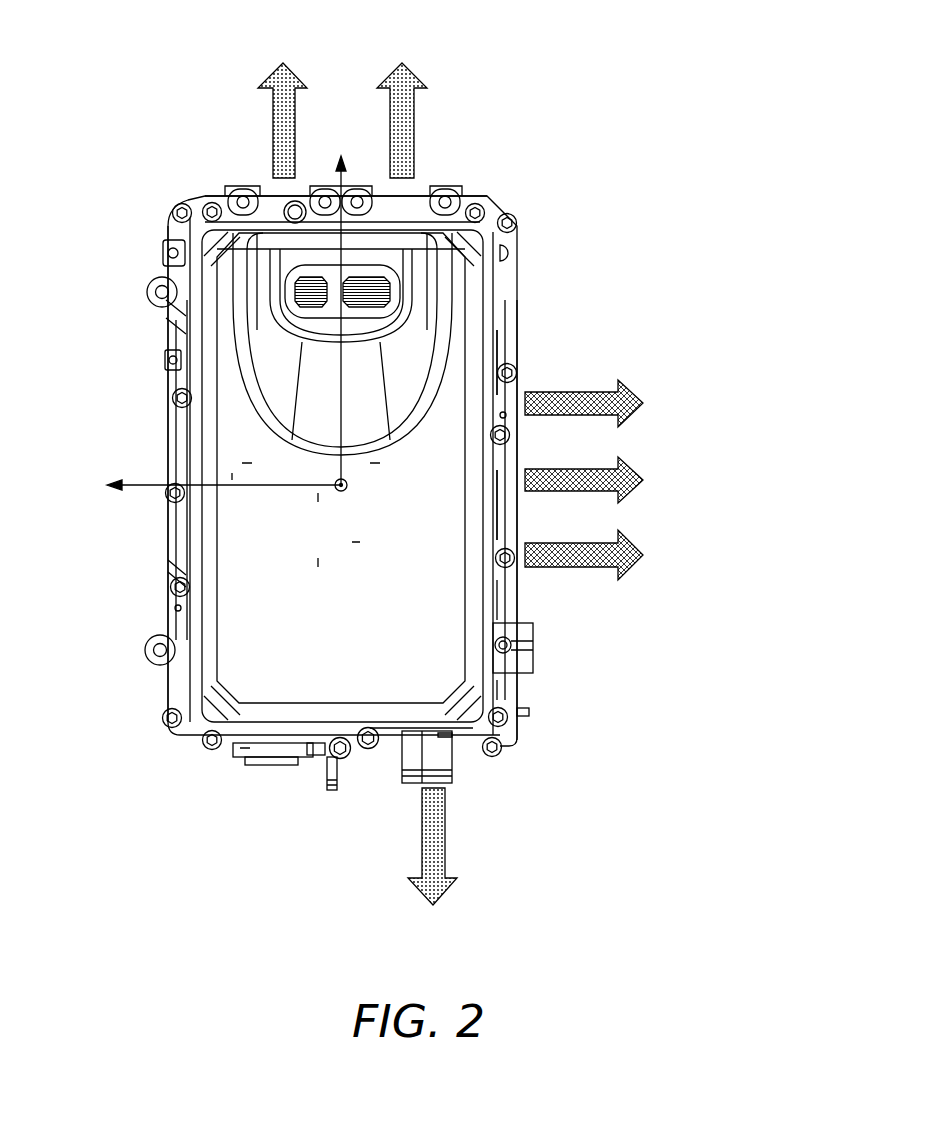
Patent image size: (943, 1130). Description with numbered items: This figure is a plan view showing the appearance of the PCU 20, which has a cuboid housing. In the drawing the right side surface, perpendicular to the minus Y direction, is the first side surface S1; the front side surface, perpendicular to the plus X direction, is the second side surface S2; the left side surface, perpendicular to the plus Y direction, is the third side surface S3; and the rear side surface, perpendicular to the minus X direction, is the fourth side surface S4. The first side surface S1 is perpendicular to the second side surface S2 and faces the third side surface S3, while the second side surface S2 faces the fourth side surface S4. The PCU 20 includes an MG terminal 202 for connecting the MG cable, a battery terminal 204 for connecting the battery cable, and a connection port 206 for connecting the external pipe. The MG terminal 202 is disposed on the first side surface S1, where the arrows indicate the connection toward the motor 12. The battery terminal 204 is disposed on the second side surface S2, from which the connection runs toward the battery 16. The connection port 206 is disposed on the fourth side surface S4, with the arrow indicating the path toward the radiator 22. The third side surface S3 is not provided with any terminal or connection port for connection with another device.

The PCU 20 is at (532, 176).
The MG terminal 202 is at (513, 462).
The battery terminal 204 is at (422, 187).
The connection port 206 is at (453, 781).
The first side surface S1 is at (512, 678).
The second side surface S2 is at (250, 187).
The third side surface S3 is at (167, 618).
The fourth side surface S4 is at (293, 763).
The battery 16 is at (344, 96).
The motor 12 is at (671, 480).
The radiator 22 is at (434, 868).